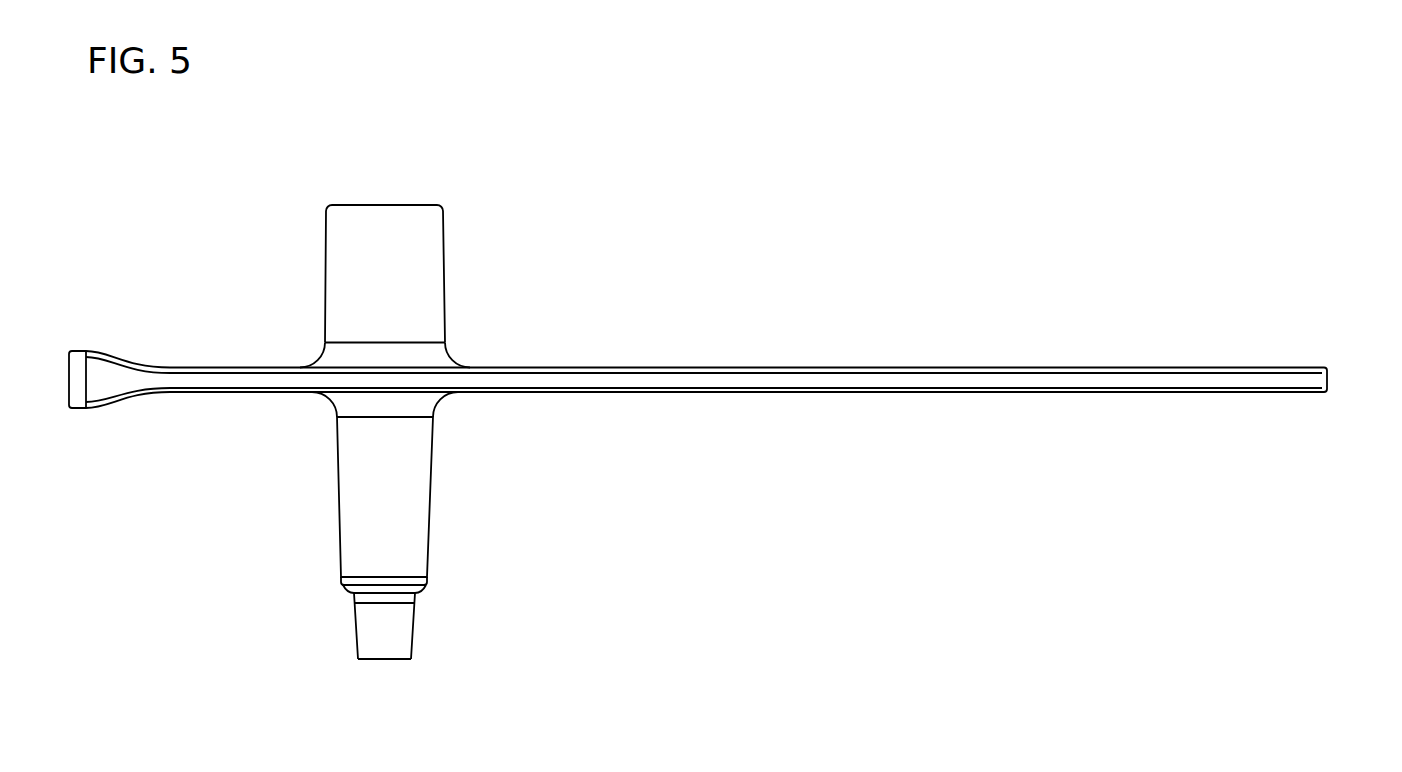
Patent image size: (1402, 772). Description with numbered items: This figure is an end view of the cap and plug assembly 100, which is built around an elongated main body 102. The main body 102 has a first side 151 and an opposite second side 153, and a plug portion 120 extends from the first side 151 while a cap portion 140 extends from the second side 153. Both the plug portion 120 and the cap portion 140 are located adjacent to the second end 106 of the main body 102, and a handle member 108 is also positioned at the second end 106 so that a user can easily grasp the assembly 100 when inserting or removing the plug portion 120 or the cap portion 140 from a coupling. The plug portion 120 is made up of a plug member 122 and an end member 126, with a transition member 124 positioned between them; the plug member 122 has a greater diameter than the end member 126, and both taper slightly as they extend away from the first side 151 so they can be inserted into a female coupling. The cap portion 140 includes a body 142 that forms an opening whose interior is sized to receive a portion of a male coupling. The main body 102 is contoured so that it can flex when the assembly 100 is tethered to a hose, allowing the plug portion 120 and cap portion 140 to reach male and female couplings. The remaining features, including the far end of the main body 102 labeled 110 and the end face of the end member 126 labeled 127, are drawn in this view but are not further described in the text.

The cap and plug assembly 100 is at (930, 140).
The main body 102 is at (873, 380).
The second end 106 is at (168, 382).
The handle member 108 is at (77, 363).
The distal end 110 is at (1315, 380).
The plug portion 120 is at (463, 542).
The plug member 122 is at (348, 500).
The transition member 124 is at (348, 588).
The end member 126 is at (408, 628).
The connector end face 127 is at (372, 660).
The cap portion 140 is at (484, 222).
The body 142 is at (388, 232).
The first side 151 is at (994, 406).
The second side 153 is at (1022, 354).